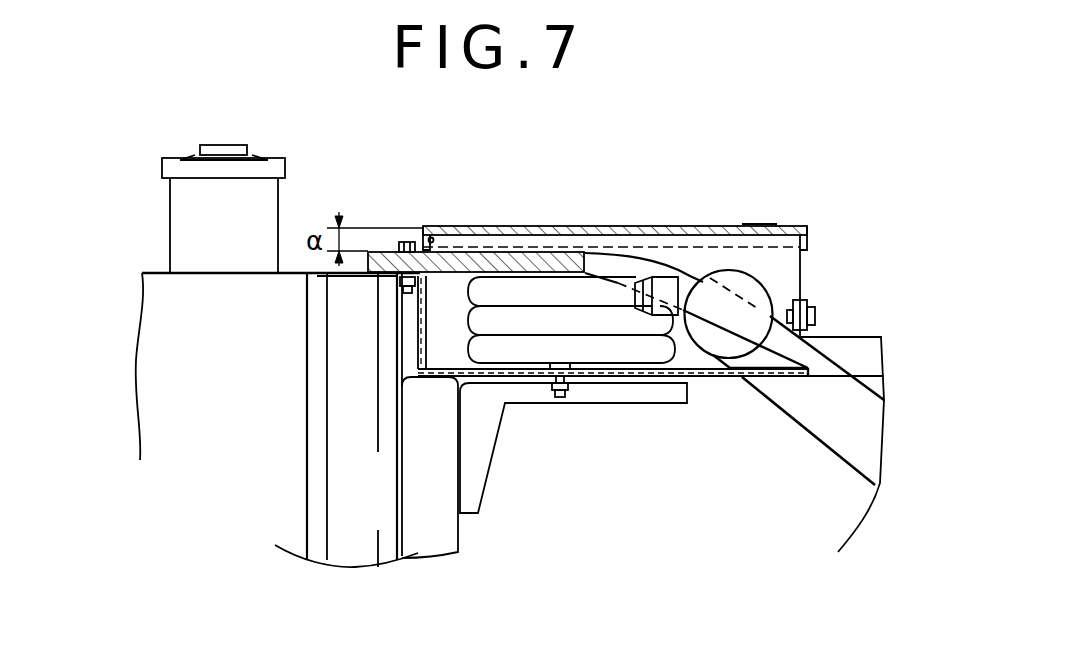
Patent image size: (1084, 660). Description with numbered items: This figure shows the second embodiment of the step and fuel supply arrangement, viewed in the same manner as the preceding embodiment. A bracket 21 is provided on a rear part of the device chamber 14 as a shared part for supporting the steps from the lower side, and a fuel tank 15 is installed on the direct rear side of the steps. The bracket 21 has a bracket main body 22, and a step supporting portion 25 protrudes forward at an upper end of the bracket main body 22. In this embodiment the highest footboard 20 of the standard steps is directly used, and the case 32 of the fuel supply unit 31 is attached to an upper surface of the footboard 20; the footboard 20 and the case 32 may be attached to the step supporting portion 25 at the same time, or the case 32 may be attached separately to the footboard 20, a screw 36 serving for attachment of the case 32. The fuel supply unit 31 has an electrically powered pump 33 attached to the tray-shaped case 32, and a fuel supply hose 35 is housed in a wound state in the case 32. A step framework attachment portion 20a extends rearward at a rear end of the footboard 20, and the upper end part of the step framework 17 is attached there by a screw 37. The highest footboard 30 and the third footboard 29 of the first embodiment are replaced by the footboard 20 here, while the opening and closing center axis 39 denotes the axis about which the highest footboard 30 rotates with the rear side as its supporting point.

The device chamber 14 is at (733, 549).
The fuel tank 15 is at (173, 357).
The step framework 17 is at (836, 443).
The highest footboard 20 is at (850, 380).
The step framework attachment portion 20a is at (404, 264).
The bracket 21 is at (395, 526).
The bracket main body 22 is at (458, 533).
The step supporting portion 25 is at (660, 402).
The third footboard 29 is at (840, 338).
The highest footboard 30 is at (581, 226).
The fuel supply unit 31 is at (686, 261).
The case 32 is at (717, 380).
The pump 33 is at (752, 272).
The fuel supply hose 35 is at (608, 364).
The screw 36 is at (557, 398).
The screw 37 is at (400, 291).
The opening and closing center axis 39 is at (428, 233).